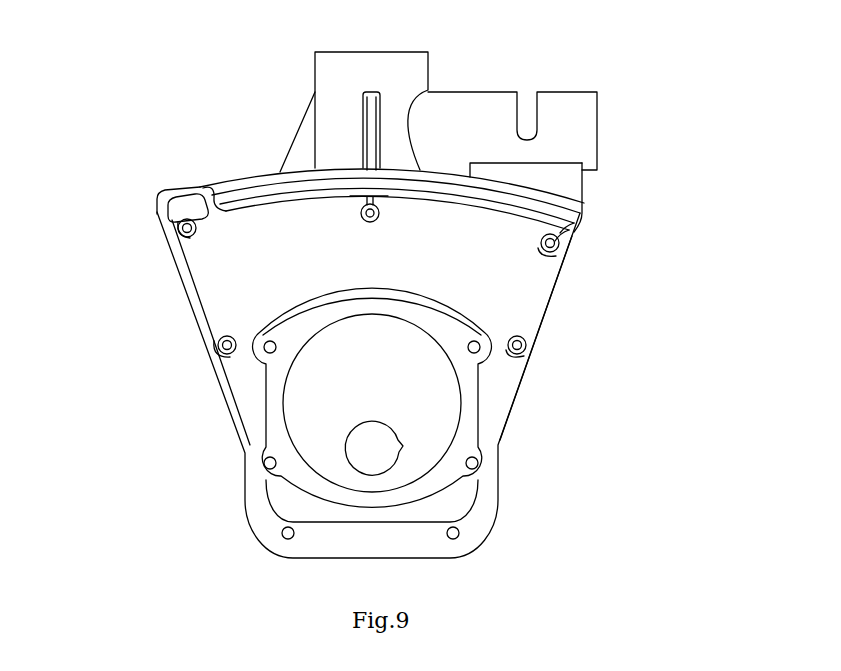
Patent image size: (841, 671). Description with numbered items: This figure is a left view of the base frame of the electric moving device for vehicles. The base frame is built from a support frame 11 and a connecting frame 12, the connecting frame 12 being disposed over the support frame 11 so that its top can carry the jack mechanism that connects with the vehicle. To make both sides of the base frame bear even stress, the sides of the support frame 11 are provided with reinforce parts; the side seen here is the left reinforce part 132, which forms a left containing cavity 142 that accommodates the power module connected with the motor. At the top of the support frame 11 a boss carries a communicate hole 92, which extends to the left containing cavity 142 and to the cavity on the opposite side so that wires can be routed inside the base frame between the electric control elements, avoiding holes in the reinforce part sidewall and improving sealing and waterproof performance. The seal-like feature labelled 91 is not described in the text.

The support frame 11 is at (500, 408).
The connecting frame 12 is at (347, 135).
The outer seal ring 91 is at (170, 200).
The communicate hole 92 is at (195, 198).
The left reinforce part 132 is at (212, 357).
The left containing cavity 142 is at (497, 287).